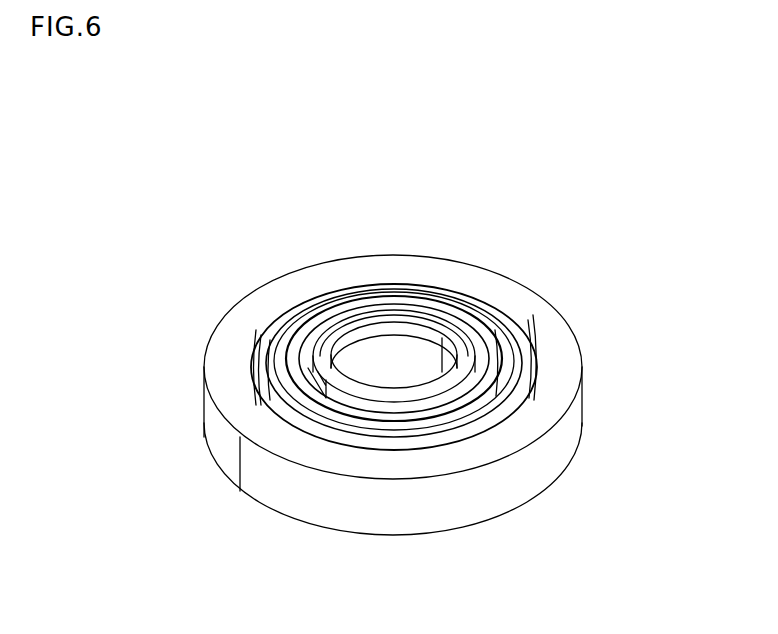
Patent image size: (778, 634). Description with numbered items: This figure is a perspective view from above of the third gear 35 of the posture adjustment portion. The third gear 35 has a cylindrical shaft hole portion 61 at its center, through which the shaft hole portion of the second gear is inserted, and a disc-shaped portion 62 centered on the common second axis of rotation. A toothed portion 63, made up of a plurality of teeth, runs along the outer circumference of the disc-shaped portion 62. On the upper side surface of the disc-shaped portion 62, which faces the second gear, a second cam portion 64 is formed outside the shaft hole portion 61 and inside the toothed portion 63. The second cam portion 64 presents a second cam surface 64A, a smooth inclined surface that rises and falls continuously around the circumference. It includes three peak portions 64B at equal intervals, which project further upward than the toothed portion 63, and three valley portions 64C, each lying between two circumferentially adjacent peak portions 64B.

The third gear 35 is at (251, 154).
The shaft hole portion 61 is at (320, 337).
The disc-shaped portion 62 is at (252, 365).
The toothed portion 63 is at (495, 497).
The second cam portion 64 is at (396, 391).
The second cam surface 64A is at (512, 378).
The peak portion 64B is at (287, 312).
The valley portion 64C is at (387, 297).